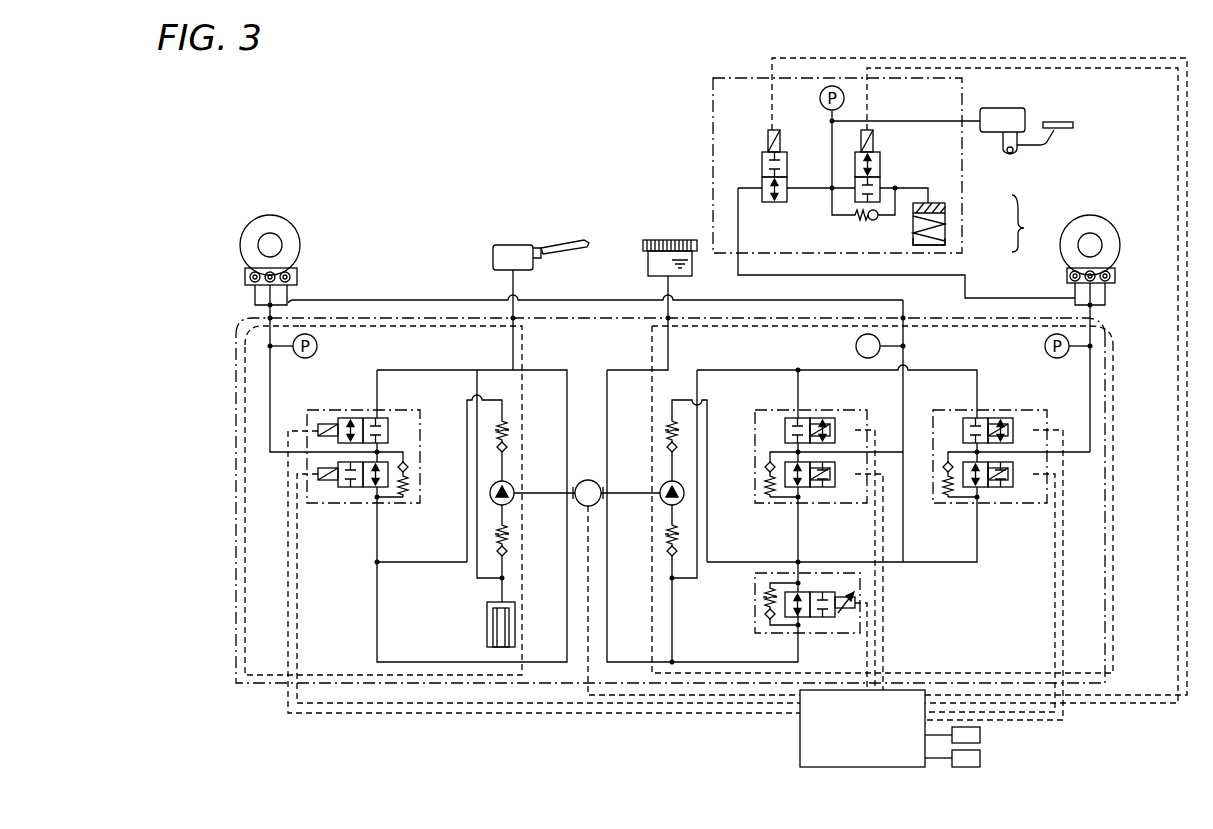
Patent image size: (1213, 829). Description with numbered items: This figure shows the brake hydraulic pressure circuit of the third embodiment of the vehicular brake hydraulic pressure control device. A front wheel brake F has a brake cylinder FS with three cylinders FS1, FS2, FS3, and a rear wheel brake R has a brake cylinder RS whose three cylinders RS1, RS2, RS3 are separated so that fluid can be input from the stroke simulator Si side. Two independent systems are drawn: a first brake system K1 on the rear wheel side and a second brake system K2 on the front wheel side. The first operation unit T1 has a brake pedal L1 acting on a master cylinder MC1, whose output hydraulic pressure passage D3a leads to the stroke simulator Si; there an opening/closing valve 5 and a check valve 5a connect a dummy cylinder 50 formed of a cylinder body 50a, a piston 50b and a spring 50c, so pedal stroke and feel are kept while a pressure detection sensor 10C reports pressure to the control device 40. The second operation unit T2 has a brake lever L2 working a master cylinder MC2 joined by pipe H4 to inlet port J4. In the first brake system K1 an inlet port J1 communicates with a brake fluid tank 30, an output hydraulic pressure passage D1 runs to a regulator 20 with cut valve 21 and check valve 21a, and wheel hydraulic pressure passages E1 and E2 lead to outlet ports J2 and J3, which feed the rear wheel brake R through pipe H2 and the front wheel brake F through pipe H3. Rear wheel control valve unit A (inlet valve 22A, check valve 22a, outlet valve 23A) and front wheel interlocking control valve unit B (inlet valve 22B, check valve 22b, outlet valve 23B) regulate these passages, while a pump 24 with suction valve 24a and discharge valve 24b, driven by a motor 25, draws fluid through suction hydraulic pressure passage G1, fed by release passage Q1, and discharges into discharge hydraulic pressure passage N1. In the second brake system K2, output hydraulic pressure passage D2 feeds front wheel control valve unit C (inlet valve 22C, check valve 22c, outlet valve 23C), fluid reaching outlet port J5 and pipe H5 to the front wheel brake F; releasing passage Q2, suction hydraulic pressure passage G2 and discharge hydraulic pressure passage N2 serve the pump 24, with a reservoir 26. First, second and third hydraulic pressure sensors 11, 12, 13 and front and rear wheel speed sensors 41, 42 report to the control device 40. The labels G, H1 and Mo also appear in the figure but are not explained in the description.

The wheel brake F is at (273, 206).
The wheel brake R is at (1097, 205).
The brake cylinder FS is at (245, 275).
The cylinder FS1 is at (255, 293).
The cylinder FS2 is at (297, 282).
The cylinder FS3 is at (297, 270).
The brake cylinder RS is at (1115, 276).
The cylinder RS1 is at (1067, 280).
The cylinder RS2 is at (1108, 285).
The cylinder RS3 is at (1112, 262).
The first operation unit T1 is at (684, 82).
The second operation unit T2 is at (537, 207).
The stroke simulator Si is at (713, 92).
The master cylinder MC1 is at (997, 108).
The master cylinder MC2 is at (510, 245).
The brake pedal L1 is at (1058, 122).
The brake lever L2 is at (572, 240).
The brake fluid tank 30 is at (668, 240).
The switching valve G is at (762, 162).
The pressure detection sensor 10C is at (828, 110).
The opening/closing valve 5 is at (880, 162).
The check valve 5a is at (870, 225).
The dummy cylinder 50 is at (982, 223).
The cylinder body 50a is at (946, 242).
The piston 50b is at (946, 208).
The spring 50c is at (946, 226).
The output hydraulic pressure passage D3a is at (878, 121).
The hydraulic passage H1 is at (672, 292).
The pipe H2 is at (1105, 322).
The pipe H3 is at (810, 300).
The pipe H4 is at (515, 290).
The pipe H5 is at (268, 318).
The inlet port J1 is at (666, 316).
The outlet port J2 is at (1113, 335).
The outlet port J3 is at (906, 318).
The inlet port J4 is at (510, 316).
The outlet port J5 is at (247, 330).
The first hydraulic pressure sensor 11 is at (1045, 346).
The second hydraulic pressure sensor 12 is at (856, 346).
The third hydraulic pressure sensor 13 is at (317, 346).
The release passage Q1 is at (952, 370).
The releasing passage Q2 is at (420, 370).
The discharge hydraulic pressure passage N1 is at (697, 388).
The discharge hydraulic pressure passage N2 is at (485, 398).
The modulator Mo is at (236, 432).
The first brake system K1 is at (1106, 585).
The second brake system K2 is at (246, 585).
The rear wheel control valve unit A is at (950, 410).
The front wheel interlocking control valve unit B is at (775, 410).
The front wheel control valve unit C is at (405, 410).
The outlet valve 23A is at (990, 418).
The outlet valve 23B is at (800, 418).
The outlet valve 23C is at (363, 418).
The inlet valve 22A is at (992, 487).
The inlet valve 22B is at (812, 487).
The inlet valve 22C is at (363, 487).
The check valve 22a is at (940, 483).
The check valve 22b is at (762, 483).
The check valve 22c is at (410, 485).
The pump 24 is at (514, 500).
The suction valve 24a is at (512, 548).
The discharge valve 24b is at (512, 445).
The motor 25 is at (588, 480).
The reservoir 26 is at (487, 630).
The wheel hydraulic pressure passage E1 is at (1078, 455).
The wheel hydraulic pressure passage E2 is at (898, 422).
The suction hydraulic pressure passage G1 is at (680, 650).
The suction hydraulic pressure passage G2 is at (512, 578).
The output hydraulic pressure passage D1 is at (632, 660).
The output hydraulic pressure passage D2 is at (547, 660).
The cut valve 21 is at (820, 615).
The check valve 21a is at (762, 597).
The regulator 20 is at (755, 630).
The control device 40 is at (862, 728).
The front wheel speed sensor 41 is at (980, 735).
The rear wheel speed sensor 42 is at (980, 758).